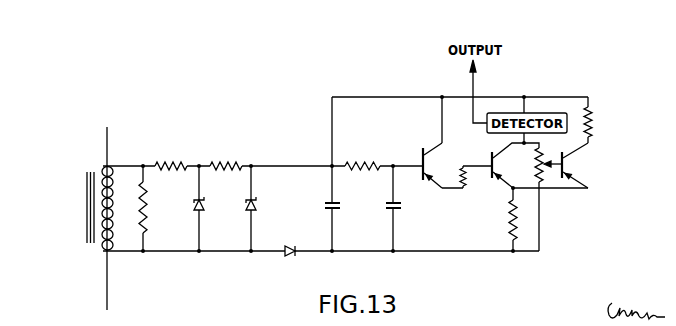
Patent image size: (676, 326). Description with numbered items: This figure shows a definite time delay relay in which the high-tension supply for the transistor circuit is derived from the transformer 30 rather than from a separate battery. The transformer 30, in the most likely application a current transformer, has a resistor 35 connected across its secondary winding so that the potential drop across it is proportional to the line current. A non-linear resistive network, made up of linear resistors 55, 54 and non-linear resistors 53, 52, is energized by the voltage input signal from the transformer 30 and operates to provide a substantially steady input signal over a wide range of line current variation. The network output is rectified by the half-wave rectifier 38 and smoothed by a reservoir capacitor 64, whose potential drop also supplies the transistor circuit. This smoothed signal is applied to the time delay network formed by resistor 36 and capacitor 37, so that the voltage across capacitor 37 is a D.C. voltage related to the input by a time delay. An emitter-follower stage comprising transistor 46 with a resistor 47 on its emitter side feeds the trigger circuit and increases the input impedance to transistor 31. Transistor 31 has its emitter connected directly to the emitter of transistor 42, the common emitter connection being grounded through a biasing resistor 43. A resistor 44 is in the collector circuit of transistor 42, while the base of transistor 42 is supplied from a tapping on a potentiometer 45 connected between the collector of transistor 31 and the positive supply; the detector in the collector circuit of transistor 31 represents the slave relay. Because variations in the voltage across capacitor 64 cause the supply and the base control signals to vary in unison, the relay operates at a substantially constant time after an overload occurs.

The transformer 30 is at (103, 270).
The resistor 35 is at (172, 218).
The linear resistor 55 is at (182, 158).
The linear resistor 54 is at (235, 158).
The non-linear resistor 53 is at (223, 226).
The non-linear resistor 52 is at (276, 226).
The resistor 36 is at (374, 158).
The reservoir capacitor 64 is at (320, 214).
The capacitor 37 is at (427, 214).
The half-wave rectifier 38 is at (301, 280).
The transistor 46 is at (450, 174).
The resistor 47 is at (469, 171).
The transistor 31 is at (490, 162).
The potentiometer 45 is at (533, 174).
The transistor 42 is at (589, 174).
The resistor 44 is at (616, 132).
The biasing resistor 43 is at (506, 232).